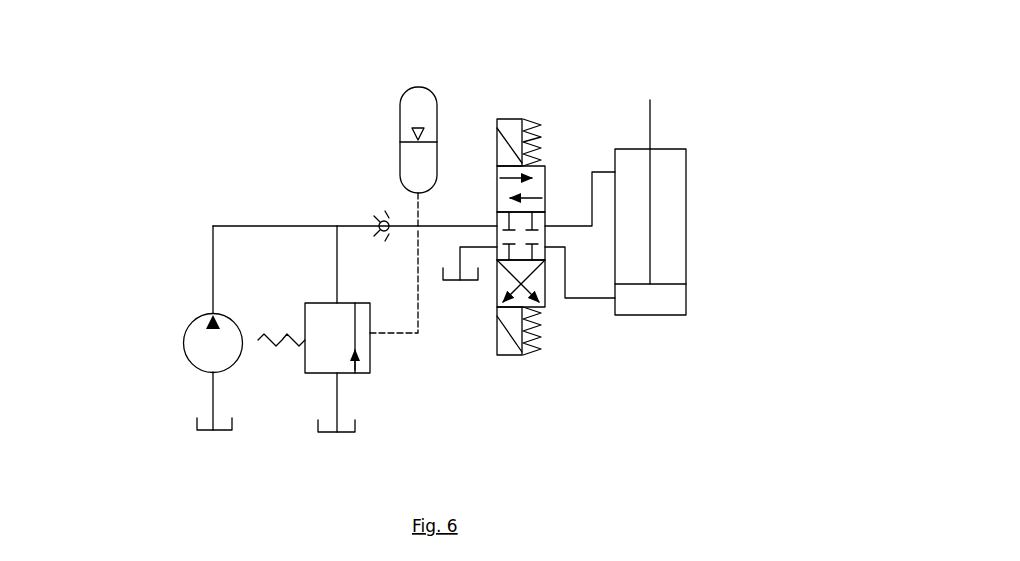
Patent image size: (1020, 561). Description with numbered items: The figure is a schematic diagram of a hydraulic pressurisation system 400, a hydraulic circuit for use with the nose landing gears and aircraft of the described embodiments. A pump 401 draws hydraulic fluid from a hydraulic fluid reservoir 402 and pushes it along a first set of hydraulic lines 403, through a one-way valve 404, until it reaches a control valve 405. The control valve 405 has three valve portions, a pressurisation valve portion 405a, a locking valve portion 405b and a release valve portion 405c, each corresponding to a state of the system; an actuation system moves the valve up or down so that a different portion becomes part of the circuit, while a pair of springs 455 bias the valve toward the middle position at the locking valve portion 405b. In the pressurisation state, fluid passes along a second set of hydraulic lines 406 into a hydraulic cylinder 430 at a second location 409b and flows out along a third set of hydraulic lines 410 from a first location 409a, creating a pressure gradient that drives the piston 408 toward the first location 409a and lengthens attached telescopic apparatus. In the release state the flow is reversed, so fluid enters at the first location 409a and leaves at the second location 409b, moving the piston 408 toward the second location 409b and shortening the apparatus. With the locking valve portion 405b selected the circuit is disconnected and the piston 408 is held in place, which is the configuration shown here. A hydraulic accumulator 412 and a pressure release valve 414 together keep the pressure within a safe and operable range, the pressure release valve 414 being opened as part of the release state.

The hydraulic pressurisation system 400 is at (186, 173).
The pump 401 is at (200, 345).
The hydraulic fluid reservoir 402 is at (197, 420).
The first set of hydraulic lines 403 is at (213, 262).
The one-way valve 404 is at (377, 223).
The control valve 405 is at (494, 102).
The pressurisation valve portion 405a is at (545, 290).
The locking valve portion 405b is at (507, 235).
The release valve portion 405c is at (544, 199).
The second set of hydraulic lines 406 is at (602, 300).
The piston 408 is at (653, 309).
The first location 409a is at (708, 157).
The second location 409b is at (711, 302).
The third set of hydraulic lines 410 is at (600, 173).
The hydraulic accumulator 412 is at (413, 102).
The pressure release valve 414 is at (357, 375).
The hydraulic cylinder 430 is at (686, 238).
The springs 455 is at (532, 120).